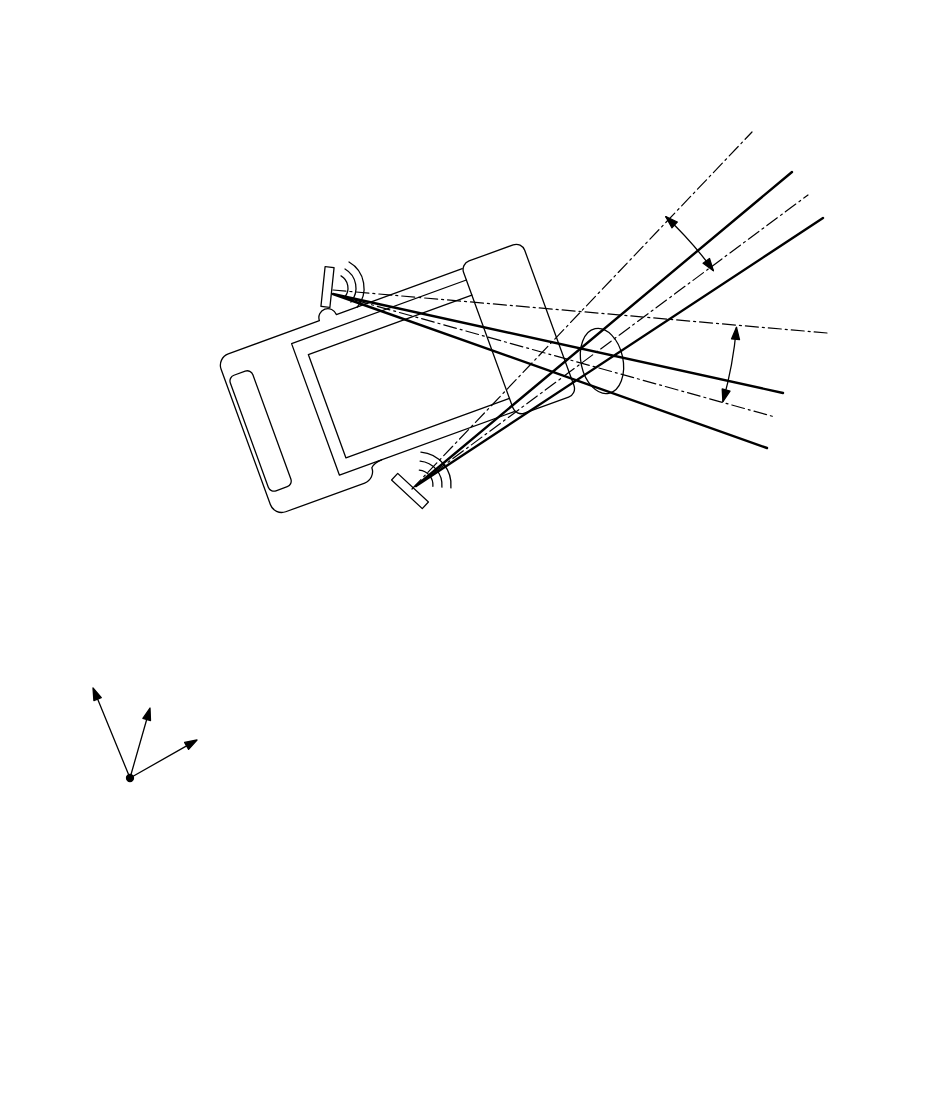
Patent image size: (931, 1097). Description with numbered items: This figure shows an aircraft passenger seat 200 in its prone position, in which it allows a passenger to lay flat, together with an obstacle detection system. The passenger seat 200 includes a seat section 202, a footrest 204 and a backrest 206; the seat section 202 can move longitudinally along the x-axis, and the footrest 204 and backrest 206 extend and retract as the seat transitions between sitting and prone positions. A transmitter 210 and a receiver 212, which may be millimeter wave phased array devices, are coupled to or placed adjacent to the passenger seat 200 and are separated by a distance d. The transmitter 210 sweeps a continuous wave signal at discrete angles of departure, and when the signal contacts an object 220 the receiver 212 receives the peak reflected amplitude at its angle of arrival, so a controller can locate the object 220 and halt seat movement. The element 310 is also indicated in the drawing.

The passenger seat 200 is at (104, 115).
The seat section 202 is at (420, 285).
The footrest 204 is at (493, 260).
The backrest 206 is at (230, 352).
The transmitter 210 is at (394, 507).
The receiver 212 is at (314, 278).
The object 220 is at (607, 411).
The battery 310 is at (221, 437).